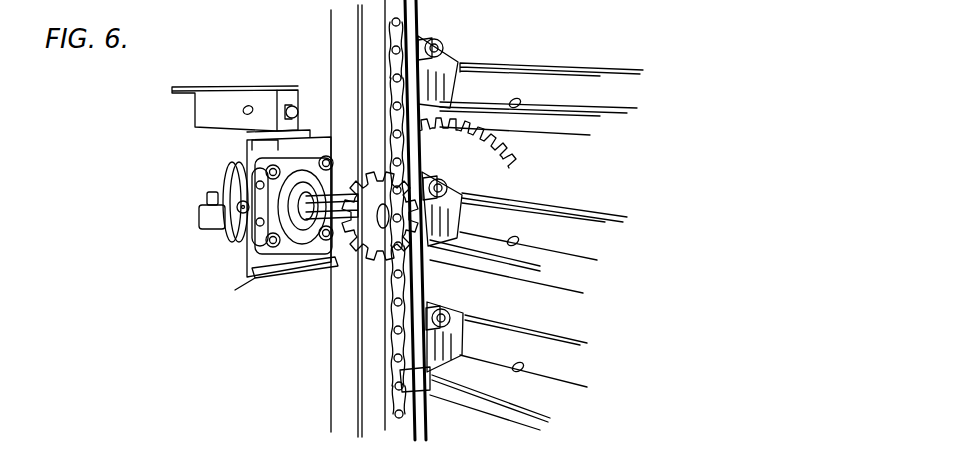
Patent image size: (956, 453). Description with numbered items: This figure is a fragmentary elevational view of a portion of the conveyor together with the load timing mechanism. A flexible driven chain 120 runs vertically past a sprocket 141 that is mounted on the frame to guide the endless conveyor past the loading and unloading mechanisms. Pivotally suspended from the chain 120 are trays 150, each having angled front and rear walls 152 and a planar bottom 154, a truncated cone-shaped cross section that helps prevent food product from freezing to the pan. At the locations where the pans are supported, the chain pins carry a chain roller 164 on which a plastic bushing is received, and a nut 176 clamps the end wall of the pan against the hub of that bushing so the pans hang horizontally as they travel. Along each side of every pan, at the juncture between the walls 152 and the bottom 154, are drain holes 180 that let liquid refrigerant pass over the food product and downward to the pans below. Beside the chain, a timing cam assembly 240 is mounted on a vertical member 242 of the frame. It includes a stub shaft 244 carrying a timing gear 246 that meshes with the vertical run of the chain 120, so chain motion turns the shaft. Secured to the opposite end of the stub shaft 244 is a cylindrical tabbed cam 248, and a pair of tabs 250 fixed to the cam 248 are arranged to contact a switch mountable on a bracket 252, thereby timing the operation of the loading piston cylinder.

The chain 120 is at (408, 148).
The sprocket 141 is at (503, 143).
The tray 150 is at (600, 64).
The front and rear walls 152 is at (576, 241).
The planar bottom 154 is at (578, 266).
The chain roller 164 is at (441, 51).
The nut 176 is at (418, 38).
The drain holes 180 is at (514, 237).
The timing cam assembly 240 is at (217, 242).
The vertical member 242 is at (331, 46).
The stub shaft 244 is at (255, 281).
The timing gear 246 is at (362, 258).
The tabbed cam 248 is at (203, 198).
The tabs 250 is at (198, 212).
The bracket 252 is at (236, 86).